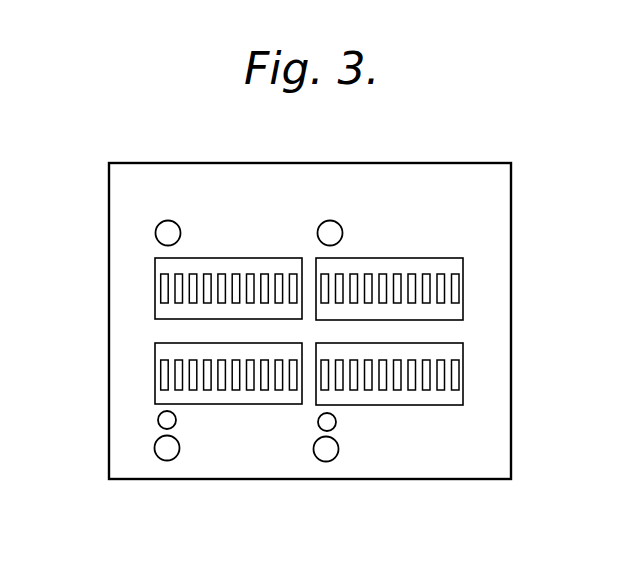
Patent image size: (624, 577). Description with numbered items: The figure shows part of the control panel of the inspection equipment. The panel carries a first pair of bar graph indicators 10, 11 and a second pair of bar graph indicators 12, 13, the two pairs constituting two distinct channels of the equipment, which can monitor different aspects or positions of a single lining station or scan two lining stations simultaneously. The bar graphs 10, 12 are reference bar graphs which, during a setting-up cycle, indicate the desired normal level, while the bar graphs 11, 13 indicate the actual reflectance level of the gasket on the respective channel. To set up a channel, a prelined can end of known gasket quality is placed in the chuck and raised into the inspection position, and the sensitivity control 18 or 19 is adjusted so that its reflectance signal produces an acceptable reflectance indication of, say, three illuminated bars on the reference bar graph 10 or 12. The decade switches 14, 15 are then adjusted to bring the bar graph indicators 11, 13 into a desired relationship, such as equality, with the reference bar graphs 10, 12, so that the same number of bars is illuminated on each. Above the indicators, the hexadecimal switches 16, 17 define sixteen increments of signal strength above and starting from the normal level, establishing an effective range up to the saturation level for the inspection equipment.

The bar graph indicator 10 is at (155, 365).
The bar graph indicator 11 is at (155, 268).
The bar graph indicator 12 is at (463, 398).
The bar graph indicator 13 is at (445, 258).
The decade switch 14 is at (163, 461).
The decade switch 15 is at (325, 462).
The hexadecimal switch 16 is at (168, 220).
The hexadecimal switch 17 is at (330, 220).
The sensitivity control 18 is at (158, 418).
The sensitivity control 19 is at (336, 424).